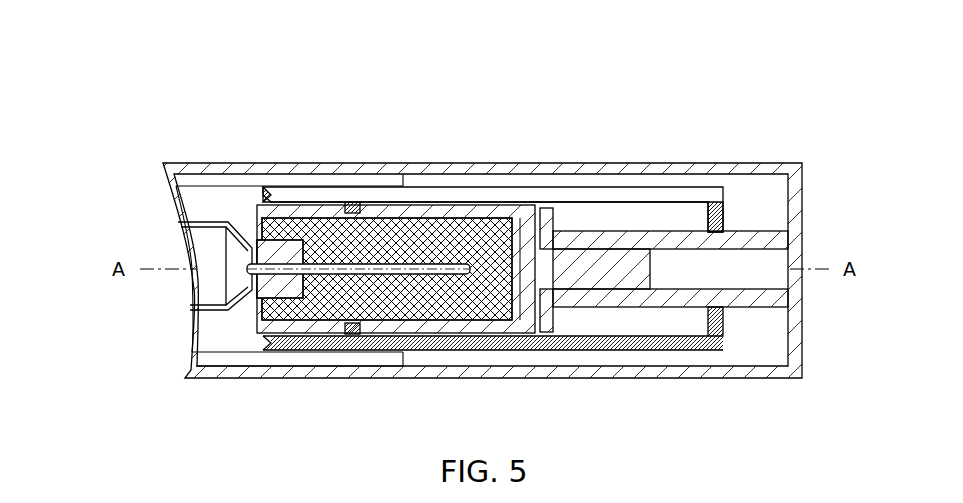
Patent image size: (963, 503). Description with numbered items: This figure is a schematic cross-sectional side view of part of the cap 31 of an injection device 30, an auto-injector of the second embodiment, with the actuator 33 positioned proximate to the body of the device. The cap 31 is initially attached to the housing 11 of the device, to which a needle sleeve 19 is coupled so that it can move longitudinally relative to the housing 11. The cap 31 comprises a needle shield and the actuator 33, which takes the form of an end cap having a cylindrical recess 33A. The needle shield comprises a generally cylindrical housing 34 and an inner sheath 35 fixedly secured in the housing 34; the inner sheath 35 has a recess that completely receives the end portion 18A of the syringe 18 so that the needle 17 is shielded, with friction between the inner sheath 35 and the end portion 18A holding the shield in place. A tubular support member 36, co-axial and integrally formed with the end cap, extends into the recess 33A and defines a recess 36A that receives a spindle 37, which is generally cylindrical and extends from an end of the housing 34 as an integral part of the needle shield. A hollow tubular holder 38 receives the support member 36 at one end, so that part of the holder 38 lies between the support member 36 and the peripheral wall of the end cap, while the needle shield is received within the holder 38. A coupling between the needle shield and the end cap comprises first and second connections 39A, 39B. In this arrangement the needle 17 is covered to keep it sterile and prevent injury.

The housing 11 is at (200, 368).
The needle 17 is at (328, 276).
The syringe 18 is at (198, 224).
The end portion 18A is at (281, 250).
The needle sleeve 19 is at (253, 355).
The injection device 30 is at (158, 130).
The cap 31 is at (735, 96).
The actuator 33 is at (765, 161).
The cylindrical recess 33A is at (762, 203).
The housing 34 is at (395, 215).
The inner sheath 35 is at (458, 240).
The support member 36 is at (764, 241).
The recess 36A is at (765, 290).
The spindle 37 is at (608, 276).
The holder 38 is at (540, 342).
The first connection 39A is at (550, 236).
The second connection 39B is at (335, 188).